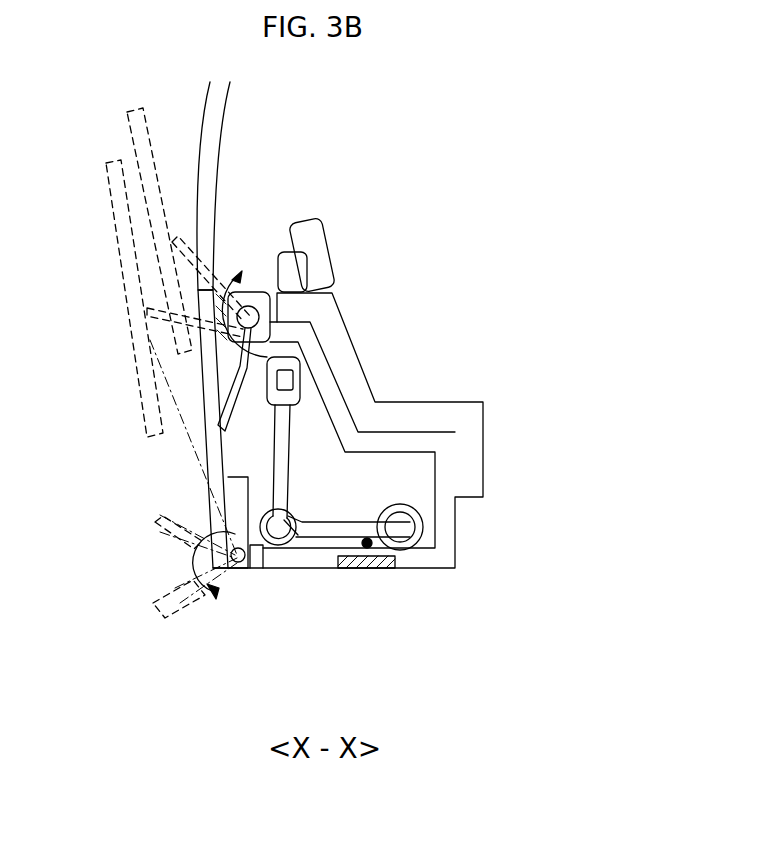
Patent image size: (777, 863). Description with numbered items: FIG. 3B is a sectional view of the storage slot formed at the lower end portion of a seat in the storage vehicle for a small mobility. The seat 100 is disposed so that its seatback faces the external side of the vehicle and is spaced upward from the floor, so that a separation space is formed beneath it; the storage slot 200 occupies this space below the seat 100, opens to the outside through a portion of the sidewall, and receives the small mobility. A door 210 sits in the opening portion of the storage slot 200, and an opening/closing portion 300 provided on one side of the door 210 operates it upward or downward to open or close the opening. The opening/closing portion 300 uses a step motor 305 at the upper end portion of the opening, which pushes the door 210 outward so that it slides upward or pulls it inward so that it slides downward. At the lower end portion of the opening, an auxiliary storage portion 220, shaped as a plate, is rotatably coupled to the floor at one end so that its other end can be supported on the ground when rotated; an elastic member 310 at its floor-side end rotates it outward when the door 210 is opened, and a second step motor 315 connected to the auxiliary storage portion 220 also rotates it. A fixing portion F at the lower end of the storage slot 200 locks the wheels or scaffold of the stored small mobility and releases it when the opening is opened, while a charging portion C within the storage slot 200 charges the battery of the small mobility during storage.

The seat 100 is at (370, 402).
The storage slot 200 is at (407, 476).
The door 210 is at (210, 363).
The auxiliary storage portion 220 is at (238, 523).
The opening/closing portion 300 is at (250, 316).
The step motor 305 is at (248, 312).
The elastic member 310 is at (238, 563).
The step motor 315 is at (252, 568).
The fixing portion F is at (367, 540).
The charging portion C is at (367, 570).